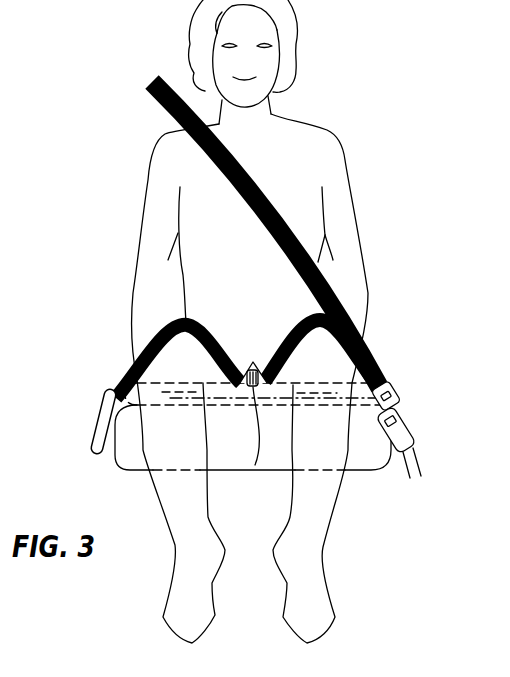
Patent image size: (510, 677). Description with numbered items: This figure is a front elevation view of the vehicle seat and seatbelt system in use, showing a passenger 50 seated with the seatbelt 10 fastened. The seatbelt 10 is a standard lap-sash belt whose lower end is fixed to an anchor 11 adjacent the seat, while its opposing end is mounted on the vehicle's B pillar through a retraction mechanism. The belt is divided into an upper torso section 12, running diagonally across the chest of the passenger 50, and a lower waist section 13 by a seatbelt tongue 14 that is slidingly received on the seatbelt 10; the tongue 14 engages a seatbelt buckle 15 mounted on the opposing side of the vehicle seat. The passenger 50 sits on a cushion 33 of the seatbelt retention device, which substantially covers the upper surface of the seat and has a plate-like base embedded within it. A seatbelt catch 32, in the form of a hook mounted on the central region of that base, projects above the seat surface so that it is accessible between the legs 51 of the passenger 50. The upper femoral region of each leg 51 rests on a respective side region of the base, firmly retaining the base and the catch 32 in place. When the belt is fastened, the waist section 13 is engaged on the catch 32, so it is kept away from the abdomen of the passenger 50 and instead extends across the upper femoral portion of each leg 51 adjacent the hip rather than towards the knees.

The seatbelt 10 is at (157, 103).
The anchor 11 is at (103, 408).
The upper torso section 12 is at (257, 185).
The lower waist section 13 is at (200, 320).
The seatbelt tongue 14 is at (393, 390).
The seatbelt buckle 15 is at (402, 432).
The seatbelt catch 32 is at (253, 362).
The cushion 33 is at (255, 465).
The passenger 50 is at (272, 138).
The legs 51 is at (253, 413).